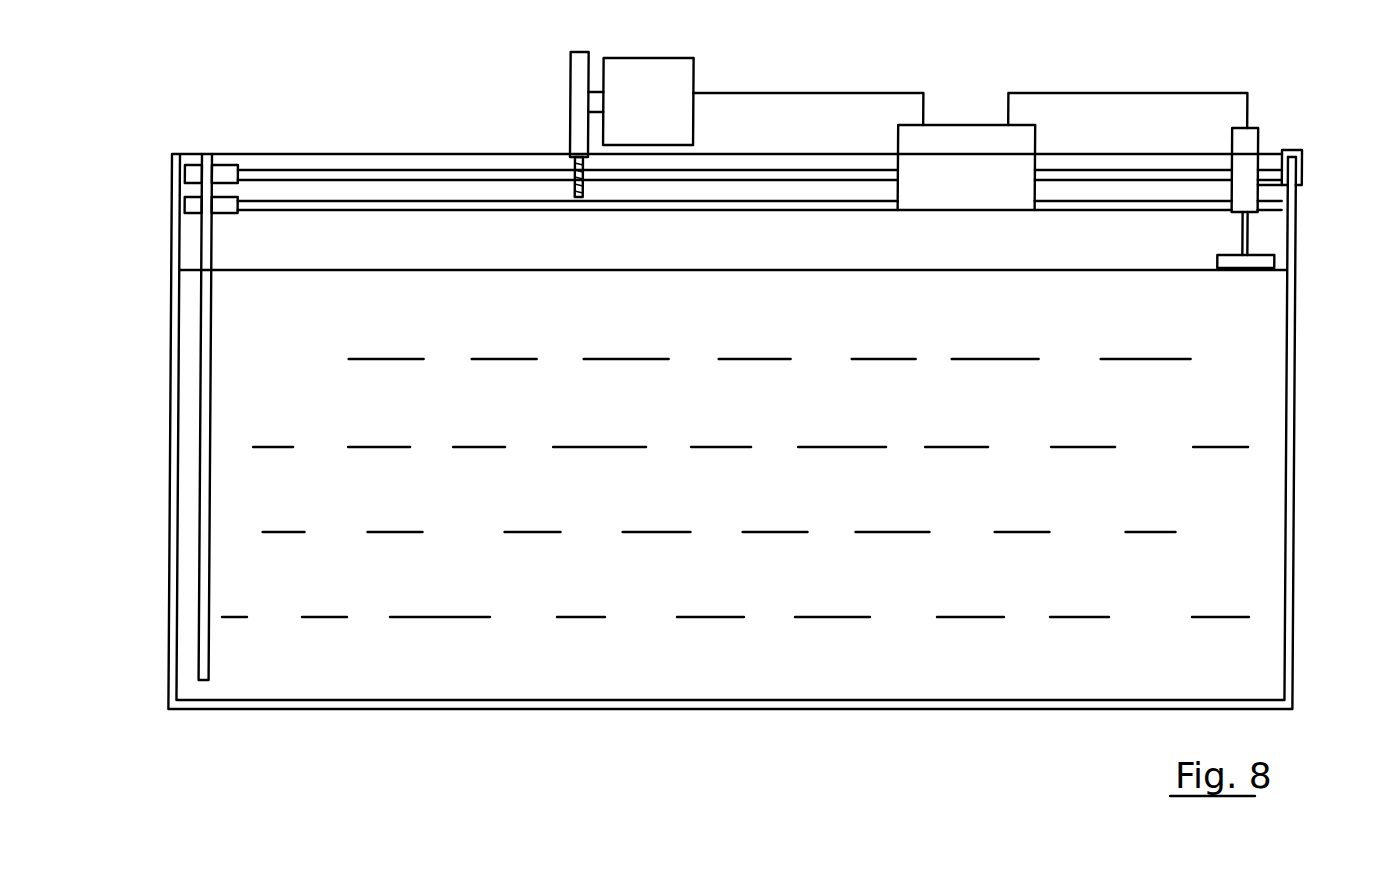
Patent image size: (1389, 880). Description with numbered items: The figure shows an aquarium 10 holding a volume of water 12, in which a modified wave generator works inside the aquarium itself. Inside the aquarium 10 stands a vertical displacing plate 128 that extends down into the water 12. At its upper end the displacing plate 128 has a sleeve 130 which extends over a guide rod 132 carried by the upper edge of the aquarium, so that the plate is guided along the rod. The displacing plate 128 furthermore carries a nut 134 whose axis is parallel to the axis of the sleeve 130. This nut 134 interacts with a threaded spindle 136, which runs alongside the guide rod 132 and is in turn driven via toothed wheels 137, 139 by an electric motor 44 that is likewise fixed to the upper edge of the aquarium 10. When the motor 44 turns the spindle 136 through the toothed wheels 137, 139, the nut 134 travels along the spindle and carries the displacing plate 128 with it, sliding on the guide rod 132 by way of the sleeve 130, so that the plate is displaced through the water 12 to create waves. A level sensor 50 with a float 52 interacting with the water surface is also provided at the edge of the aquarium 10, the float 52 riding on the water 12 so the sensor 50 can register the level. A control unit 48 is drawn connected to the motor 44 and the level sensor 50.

The aquarium 10 is at (1310, 450).
The volume of water 12 is at (1147, 497).
The electric motor 44 is at (683, 70).
The controller 48 is at (987, 188).
The level sensor 50 is at (1243, 152).
The float 52 is at (1242, 264).
The vertical displacing plate 128 is at (203, 532).
The sleeve 130 is at (195, 205).
The guide rod 132 is at (338, 205).
The nut 134 is at (196, 172).
The threaded spindle 136 is at (445, 170).
The toothed wheel 137 is at (573, 188).
The toothed wheel 139 is at (577, 85).